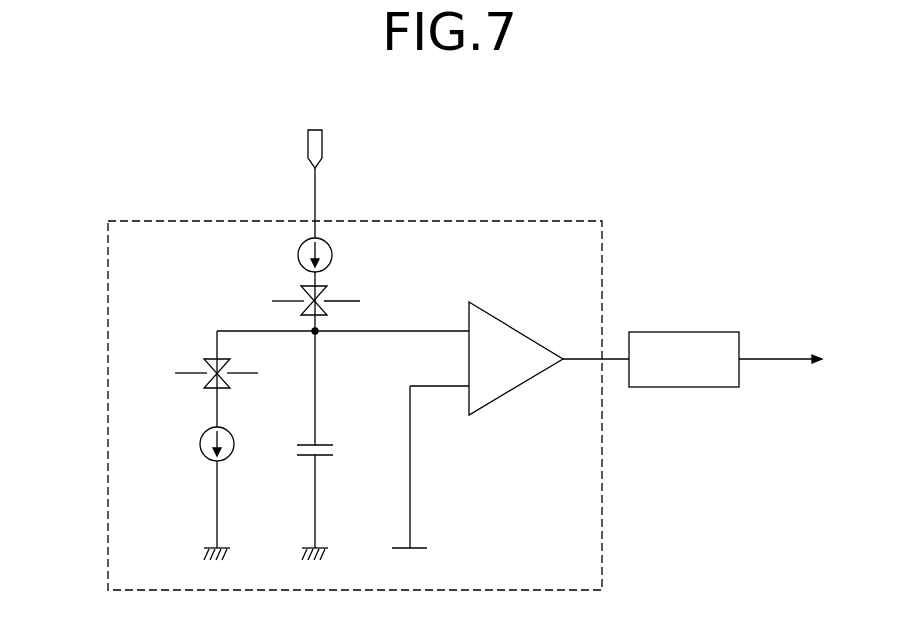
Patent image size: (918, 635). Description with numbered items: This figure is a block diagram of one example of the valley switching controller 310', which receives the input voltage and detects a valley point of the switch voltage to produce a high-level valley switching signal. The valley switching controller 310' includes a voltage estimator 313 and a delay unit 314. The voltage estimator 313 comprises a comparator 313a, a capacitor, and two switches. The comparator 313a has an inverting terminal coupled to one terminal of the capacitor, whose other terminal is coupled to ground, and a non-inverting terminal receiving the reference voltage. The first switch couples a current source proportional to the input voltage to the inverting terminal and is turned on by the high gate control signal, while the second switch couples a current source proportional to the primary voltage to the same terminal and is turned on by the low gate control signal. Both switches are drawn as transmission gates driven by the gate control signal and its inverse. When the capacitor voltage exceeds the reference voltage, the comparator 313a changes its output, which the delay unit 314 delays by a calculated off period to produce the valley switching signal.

The valley switching controller 310' is at (465, 349).
The voltage estimator 313 is at (508, 221).
The comparator 313a is at (519, 331).
The delay unit 314 is at (686, 332).